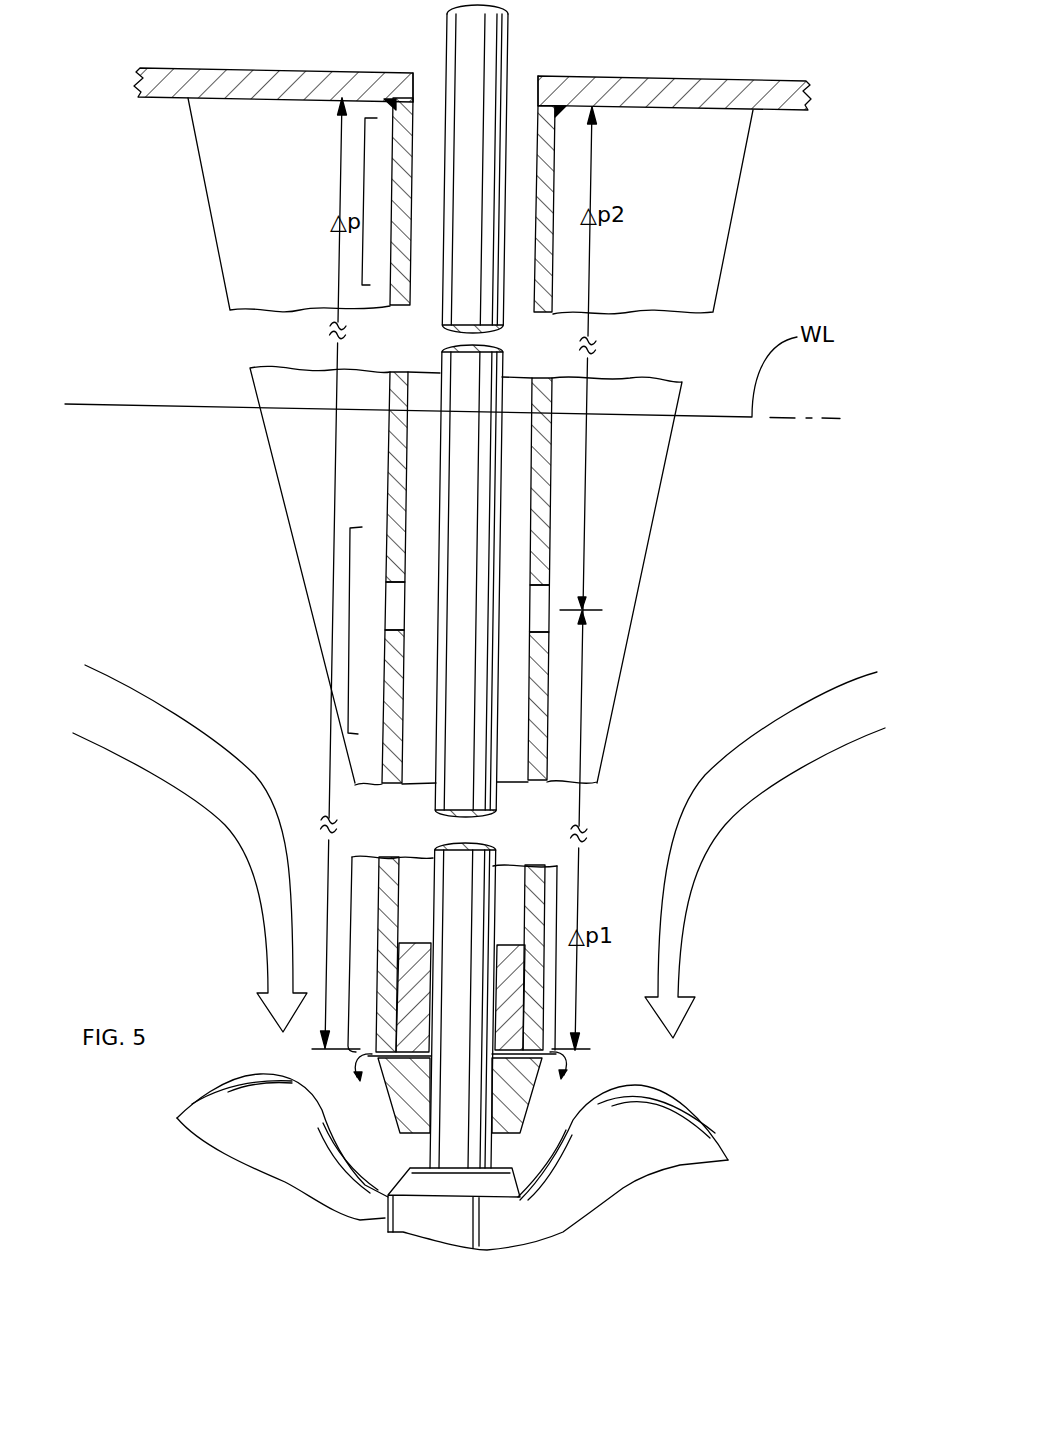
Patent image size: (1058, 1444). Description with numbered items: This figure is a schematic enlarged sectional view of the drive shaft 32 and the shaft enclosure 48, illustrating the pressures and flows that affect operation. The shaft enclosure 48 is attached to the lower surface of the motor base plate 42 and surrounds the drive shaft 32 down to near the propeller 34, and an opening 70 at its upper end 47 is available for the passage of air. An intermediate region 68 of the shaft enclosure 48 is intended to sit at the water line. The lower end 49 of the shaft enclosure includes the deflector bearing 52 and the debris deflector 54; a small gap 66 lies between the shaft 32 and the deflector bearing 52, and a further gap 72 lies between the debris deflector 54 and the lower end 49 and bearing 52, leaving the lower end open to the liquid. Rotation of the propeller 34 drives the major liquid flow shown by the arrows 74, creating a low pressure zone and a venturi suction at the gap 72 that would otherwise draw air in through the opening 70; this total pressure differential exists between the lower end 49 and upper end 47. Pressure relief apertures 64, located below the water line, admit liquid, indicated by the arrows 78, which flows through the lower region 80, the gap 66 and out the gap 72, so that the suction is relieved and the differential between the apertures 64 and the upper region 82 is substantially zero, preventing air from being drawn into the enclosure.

The drive shaft 32 is at (492, 35).
The motor base plate 42 is at (712, 80).
The opening 70 is at (427, 82).
The upper end of shaft enclosure 47 is at (402, 154).
The shaft enclosure 48 is at (565, 297).
The upper region of shaft enclosure 82 is at (363, 187).
The arrows indicating liquid flow 78 is at (420, 624).
The intermediate region 68 is at (347, 634).
The pressure relief apertures 64 is at (543, 615).
The deflector bearing 52 is at (417, 972).
The lower region of shaft enclosure 80 is at (347, 946).
The lower end of shaft enclosure 49 is at (577, 957).
The gap 66 is at (527, 945).
The debris deflector 54 is at (528, 1108).
The gap 72 is at (387, 1065).
The arrows indicating major liquid flow 74 is at (200, 790).
The propeller 34 is at (685, 1148).